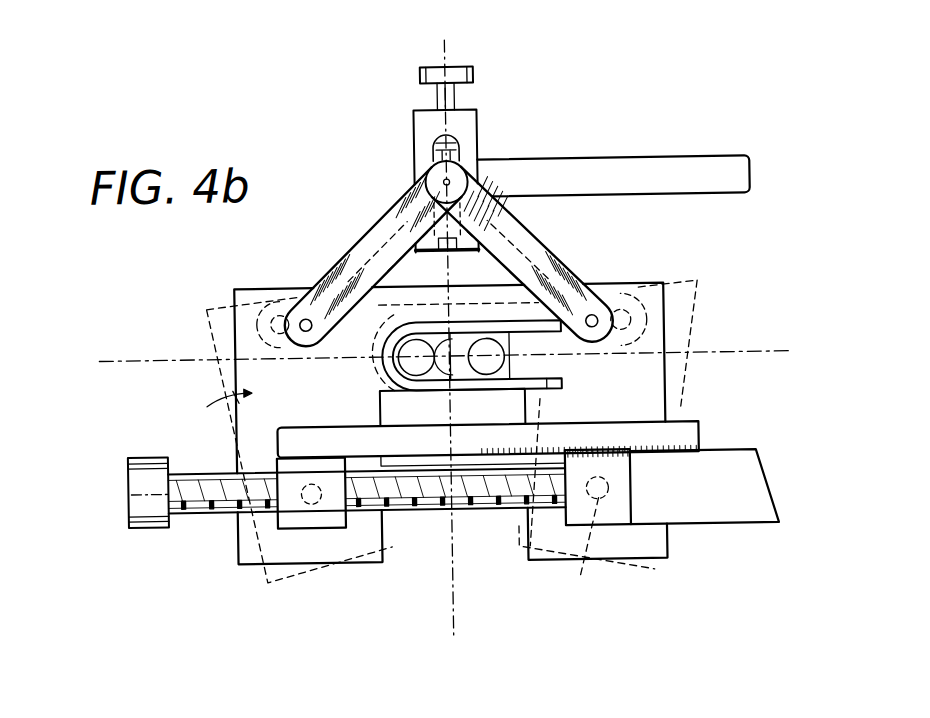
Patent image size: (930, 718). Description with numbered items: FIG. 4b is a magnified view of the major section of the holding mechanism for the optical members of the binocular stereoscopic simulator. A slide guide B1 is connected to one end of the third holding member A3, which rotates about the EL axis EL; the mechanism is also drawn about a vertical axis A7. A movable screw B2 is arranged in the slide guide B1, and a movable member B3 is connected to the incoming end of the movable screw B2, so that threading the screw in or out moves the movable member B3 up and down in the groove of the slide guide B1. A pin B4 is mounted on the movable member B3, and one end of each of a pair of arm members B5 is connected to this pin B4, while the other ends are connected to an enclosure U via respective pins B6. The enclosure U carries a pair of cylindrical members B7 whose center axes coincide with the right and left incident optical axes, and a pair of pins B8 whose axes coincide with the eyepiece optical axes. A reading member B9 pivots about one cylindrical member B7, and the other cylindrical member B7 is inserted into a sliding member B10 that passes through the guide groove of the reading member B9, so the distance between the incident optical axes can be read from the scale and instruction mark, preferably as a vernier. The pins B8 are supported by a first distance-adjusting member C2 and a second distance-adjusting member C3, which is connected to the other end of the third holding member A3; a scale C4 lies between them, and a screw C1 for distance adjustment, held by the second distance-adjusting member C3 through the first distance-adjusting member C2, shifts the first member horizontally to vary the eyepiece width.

The third holding member A3 is at (665, 198).
The vertical axis A7 is at (447, 617).
The slide guide B1 is at (418, 134).
The movable screw B2 is at (427, 70).
The movable member B3 is at (468, 165).
The pin B4 is at (433, 170).
The arm members B5 is at (356, 244).
The pins B6 is at (305, 292).
The cylindrical members B7 is at (443, 378).
The pins B8 is at (272, 587).
The reading member B9 is at (563, 384).
The sliding member B10 is at (515, 367).
The screw for distance adjustment C1 is at (158, 521).
The first distance-adjusting member C2 is at (338, 526).
The second distance-adjusting member C3 is at (610, 509).
The scale C4 is at (700, 434).
The EL axis EL is at (151, 354).
The enclosure U is at (537, 580).